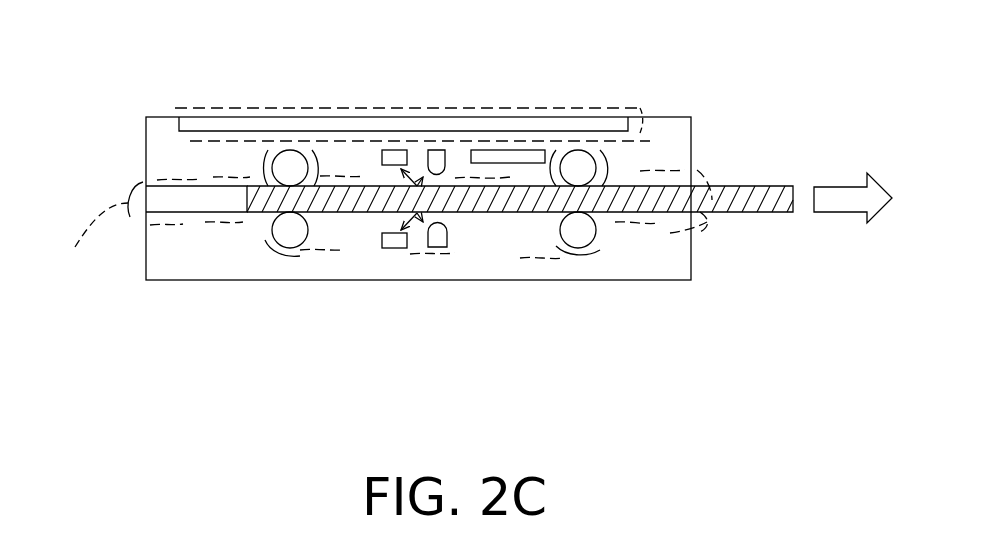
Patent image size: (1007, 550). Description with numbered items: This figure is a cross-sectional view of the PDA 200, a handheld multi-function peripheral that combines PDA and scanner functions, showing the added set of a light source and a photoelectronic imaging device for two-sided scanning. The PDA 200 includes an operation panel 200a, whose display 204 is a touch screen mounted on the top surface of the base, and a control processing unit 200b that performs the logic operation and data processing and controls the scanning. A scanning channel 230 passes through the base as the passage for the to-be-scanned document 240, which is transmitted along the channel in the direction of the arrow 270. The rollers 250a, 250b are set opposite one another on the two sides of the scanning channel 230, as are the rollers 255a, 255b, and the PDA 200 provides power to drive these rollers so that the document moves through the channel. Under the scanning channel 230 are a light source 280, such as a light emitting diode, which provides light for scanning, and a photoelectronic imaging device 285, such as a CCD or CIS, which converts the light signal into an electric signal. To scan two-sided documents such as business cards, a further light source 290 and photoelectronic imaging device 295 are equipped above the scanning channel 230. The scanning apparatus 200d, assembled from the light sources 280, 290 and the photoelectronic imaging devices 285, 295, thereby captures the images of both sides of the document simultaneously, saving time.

The PDA 200 is at (691, 162).
The operation panel 200a is at (167, 133).
The control processing unit 200b is at (530, 150).
The scanning apparatus 200d is at (84, 246).
The display 204 is at (203, 123).
The scanning channel 230 is at (188, 201).
The to-be-scanned document 240 is at (250, 209).
The roller 250a is at (292, 232).
The roller 250b is at (288, 167).
The roller 255a is at (579, 234).
The roller 255b is at (588, 166).
The arrow 270 is at (836, 198).
The light source 280 is at (437, 242).
The photoelectronic imaging device 285 is at (395, 249).
The light source 290 is at (437, 153).
The photoelectronic imaging device 295 is at (390, 152).